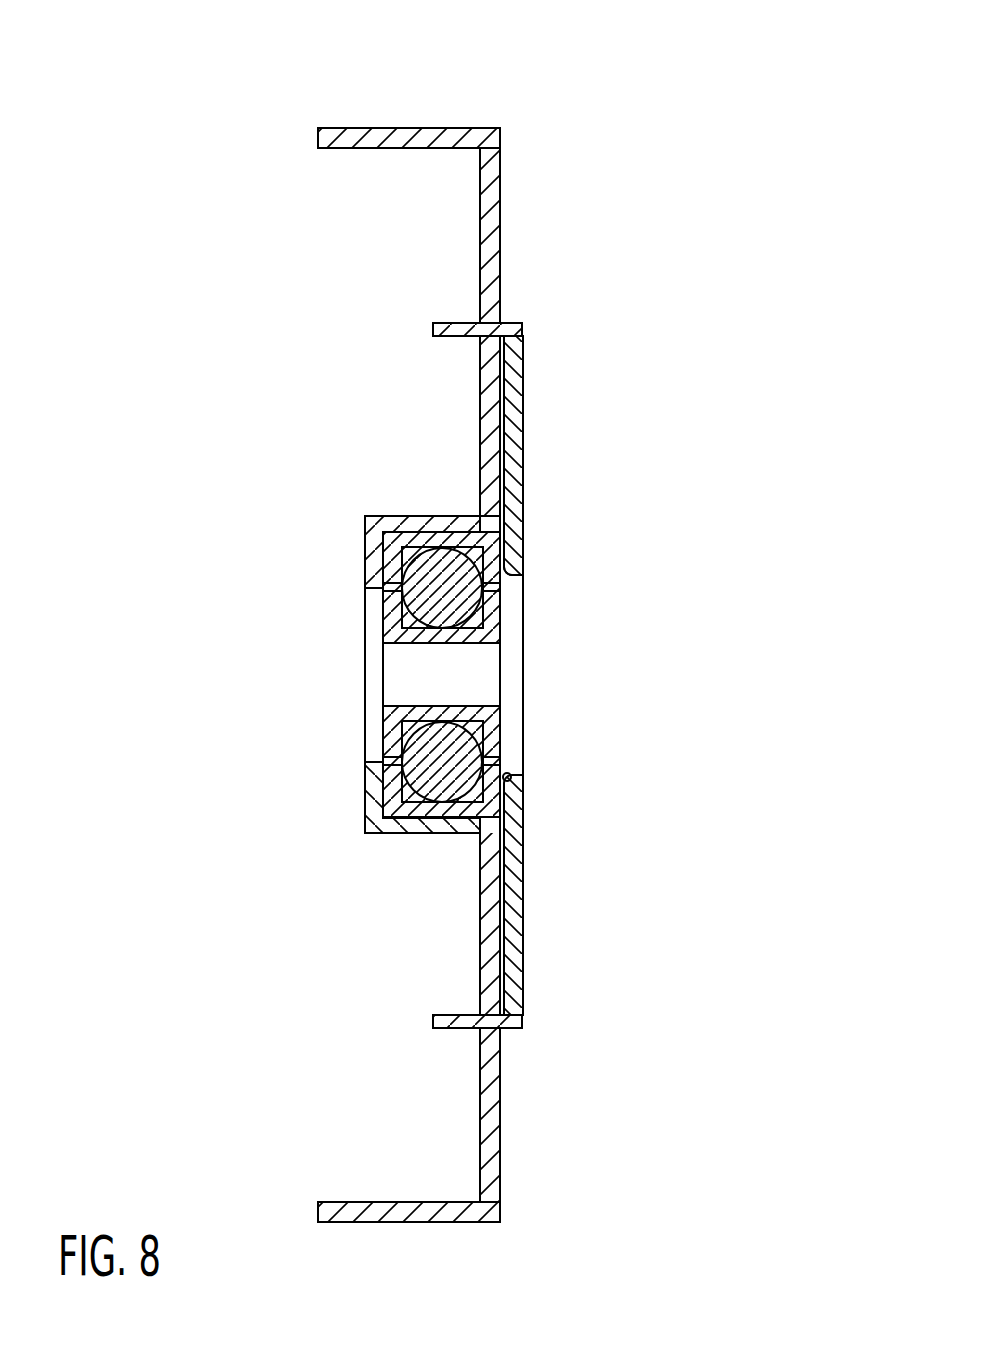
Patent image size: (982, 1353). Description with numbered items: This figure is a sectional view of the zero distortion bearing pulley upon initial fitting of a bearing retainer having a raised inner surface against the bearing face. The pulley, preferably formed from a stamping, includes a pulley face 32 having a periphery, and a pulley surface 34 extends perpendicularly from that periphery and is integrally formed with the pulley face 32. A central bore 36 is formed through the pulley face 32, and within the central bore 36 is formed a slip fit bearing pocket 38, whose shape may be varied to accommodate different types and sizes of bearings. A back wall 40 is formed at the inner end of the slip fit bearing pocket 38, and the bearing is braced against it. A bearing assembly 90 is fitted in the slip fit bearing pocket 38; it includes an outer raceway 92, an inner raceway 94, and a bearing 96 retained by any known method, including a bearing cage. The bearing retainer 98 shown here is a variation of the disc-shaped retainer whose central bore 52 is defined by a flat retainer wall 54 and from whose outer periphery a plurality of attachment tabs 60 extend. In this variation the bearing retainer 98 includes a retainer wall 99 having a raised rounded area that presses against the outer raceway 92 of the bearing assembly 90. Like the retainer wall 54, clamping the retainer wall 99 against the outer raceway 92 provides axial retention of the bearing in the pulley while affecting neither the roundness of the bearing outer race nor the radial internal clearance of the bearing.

The pulley face 32 is at (497, 240).
The pulley surface 34 is at (403, 135).
The central bore 36 is at (370, 588).
The slip fit bearing pocket 38 is at (420, 825).
The back wall 40 is at (378, 545).
The central bore 52 is at (507, 773).
The retainer wall 54 is at (512, 780).
The attachment tabs 60 is at (452, 324).
The bearing assembly 90 is at (477, 620).
The outer raceway 92 is at (503, 522).
The inner raceway 94 is at (455, 637).
The bearing 96 is at (450, 587).
The bearing retainer 98 is at (512, 443).
The retainer wall 99 is at (510, 570).